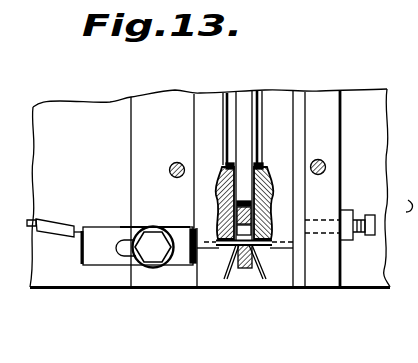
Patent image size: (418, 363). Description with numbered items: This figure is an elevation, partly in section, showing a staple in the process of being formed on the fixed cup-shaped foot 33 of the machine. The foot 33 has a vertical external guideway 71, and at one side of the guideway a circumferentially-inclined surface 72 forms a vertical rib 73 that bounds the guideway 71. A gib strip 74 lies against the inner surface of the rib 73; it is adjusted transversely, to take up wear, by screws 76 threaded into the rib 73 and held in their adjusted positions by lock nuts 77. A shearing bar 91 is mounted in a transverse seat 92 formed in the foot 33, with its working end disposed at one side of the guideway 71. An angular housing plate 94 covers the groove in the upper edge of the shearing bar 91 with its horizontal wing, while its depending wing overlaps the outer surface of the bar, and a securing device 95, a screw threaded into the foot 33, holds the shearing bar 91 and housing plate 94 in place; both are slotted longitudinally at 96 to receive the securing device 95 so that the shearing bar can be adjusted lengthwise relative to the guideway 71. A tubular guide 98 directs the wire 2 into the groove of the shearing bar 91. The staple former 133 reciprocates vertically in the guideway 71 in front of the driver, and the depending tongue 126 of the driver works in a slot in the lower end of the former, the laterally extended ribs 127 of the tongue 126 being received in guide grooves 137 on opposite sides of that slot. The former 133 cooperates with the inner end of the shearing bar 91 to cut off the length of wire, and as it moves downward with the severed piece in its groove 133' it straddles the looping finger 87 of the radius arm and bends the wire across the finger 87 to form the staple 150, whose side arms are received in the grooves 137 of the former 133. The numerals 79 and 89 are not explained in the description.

The cup-shaped foot 33 is at (54, 112).
The circumferentially-inclined surface 72 is at (367, 97).
The vertical rib 73 is at (318, 97).
The gib strip 74 is at (300, 277).
The vertical external guideway 71 is at (283, 277).
The staple former 133 is at (225, 145).
The depending tongue 126 is at (244, 105).
The guide grooves 137 is at (223, 168).
The laterally extended ribs 127 is at (217, 175).
The pin 79 is at (171, 166).
The valve member 89 is at (247, 231).
The staple 150 is at (223, 277).
The looping finger 87 is at (245, 273).
The groove 133' is at (246, 279).
The angular housing plate 94 is at (103, 257).
The securing device 95 is at (153, 255).
The longitudinal slot 96 is at (125, 240).
The transverse seat 92 is at (173, 225).
The shearing bar 91 is at (80, 257).
The tubular guide 98 is at (51, 223).
The wire 2 is at (27, 222).
The screws 76 is at (363, 217).
The lock nuts 77 is at (344, 242).